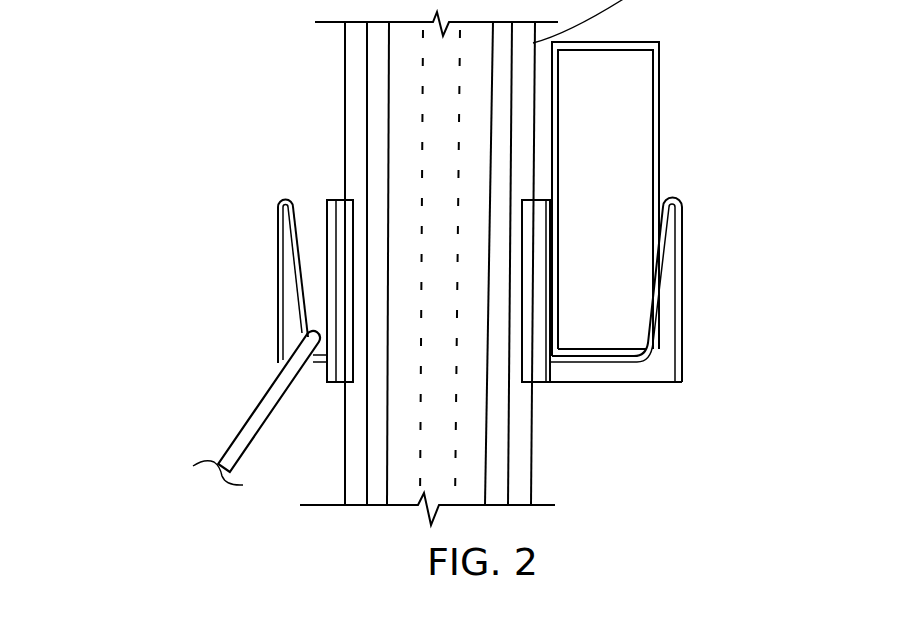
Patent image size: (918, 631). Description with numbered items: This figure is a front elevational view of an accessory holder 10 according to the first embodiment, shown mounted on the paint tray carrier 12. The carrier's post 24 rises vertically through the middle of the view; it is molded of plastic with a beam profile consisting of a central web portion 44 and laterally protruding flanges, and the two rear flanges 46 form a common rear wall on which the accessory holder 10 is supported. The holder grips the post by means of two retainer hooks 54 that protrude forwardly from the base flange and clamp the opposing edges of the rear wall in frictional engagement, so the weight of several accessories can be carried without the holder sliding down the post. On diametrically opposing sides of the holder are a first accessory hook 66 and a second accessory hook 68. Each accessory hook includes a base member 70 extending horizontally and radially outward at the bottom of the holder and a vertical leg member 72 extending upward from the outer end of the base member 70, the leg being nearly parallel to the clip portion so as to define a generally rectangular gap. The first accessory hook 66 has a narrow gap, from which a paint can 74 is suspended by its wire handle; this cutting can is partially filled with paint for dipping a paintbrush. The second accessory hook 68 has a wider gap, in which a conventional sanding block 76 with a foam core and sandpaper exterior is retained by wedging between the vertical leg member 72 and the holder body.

The accessory holder 10 is at (255, 292).
The paint tray carrier 12 is at (325, 83).
The post 24 is at (478, 442).
The central web portion 44 is at (462, 95).
The rear flanges 46 is at (347, 118).
The retainer hooks 54 is at (345, 268).
The first accessory hook 66 is at (267, 228).
The second accessory hook 68 is at (695, 251).
The base member 70 is at (318, 377).
The vertical leg member 72 is at (292, 313).
The paint can 74 is at (243, 423).
The sanding block 76 is at (640, 123).